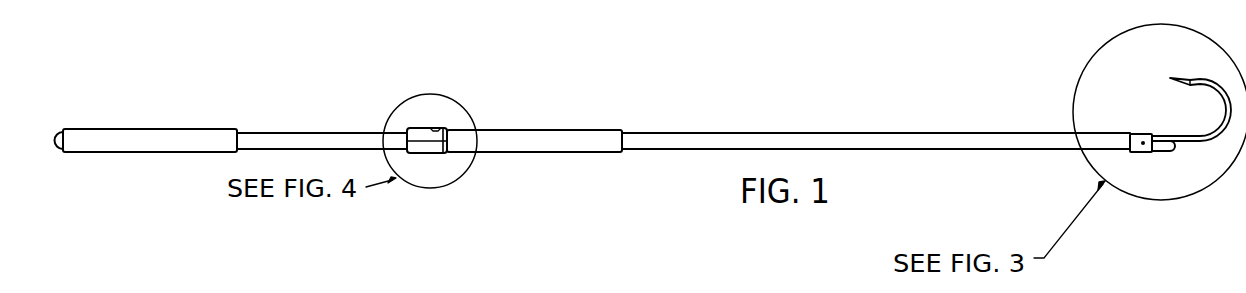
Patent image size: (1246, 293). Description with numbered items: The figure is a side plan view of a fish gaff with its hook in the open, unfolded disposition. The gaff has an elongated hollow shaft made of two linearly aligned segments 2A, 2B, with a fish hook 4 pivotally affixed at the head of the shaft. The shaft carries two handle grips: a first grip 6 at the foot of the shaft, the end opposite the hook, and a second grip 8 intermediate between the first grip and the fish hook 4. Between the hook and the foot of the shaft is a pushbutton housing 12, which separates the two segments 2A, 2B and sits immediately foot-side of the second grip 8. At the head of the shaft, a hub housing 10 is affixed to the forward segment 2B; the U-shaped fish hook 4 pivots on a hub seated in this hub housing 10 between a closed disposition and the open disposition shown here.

The first handle grip 6 is at (176, 129).
The shaft segment 2A is at (294, 132).
The pushbutton housing 12 is at (431, 153).
The second handle grip 8 is at (563, 130).
The forward shaft segment 2B is at (788, 133).
The hub housing 10 is at (1165, 152).
The fish hook 4 is at (1228, 96).